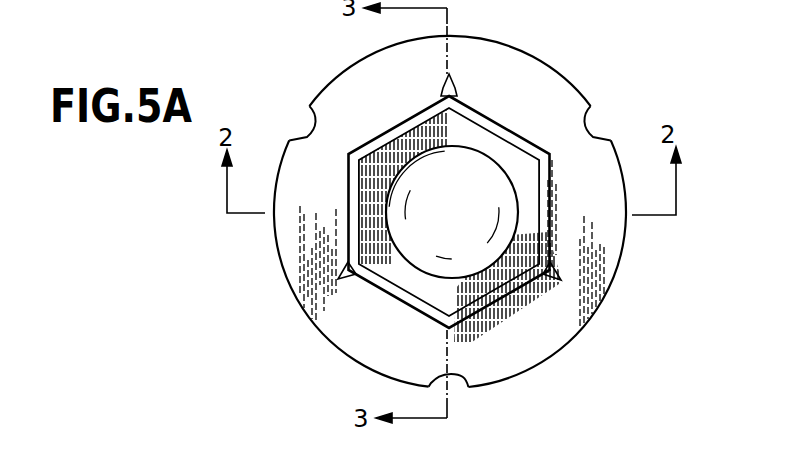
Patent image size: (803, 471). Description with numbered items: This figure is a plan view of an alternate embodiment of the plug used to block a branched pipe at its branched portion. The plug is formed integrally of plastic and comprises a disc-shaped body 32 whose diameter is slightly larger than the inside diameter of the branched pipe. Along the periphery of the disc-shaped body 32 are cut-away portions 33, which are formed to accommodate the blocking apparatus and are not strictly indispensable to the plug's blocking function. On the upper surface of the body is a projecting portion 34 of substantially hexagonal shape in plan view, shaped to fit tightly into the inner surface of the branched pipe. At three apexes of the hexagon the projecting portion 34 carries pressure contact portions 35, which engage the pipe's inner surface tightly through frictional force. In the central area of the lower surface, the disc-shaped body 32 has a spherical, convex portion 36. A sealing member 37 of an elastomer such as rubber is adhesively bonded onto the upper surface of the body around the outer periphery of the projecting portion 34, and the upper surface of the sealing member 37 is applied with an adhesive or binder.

The disc-shaped body 32 is at (615, 151).
The cut-away portions 33 is at (298, 136).
The projecting portion 34 is at (547, 246).
The pressure contact portions 35 is at (452, 73).
The spherical, convex portion 36 is at (423, 265).
The sealing member 37 is at (530, 350).